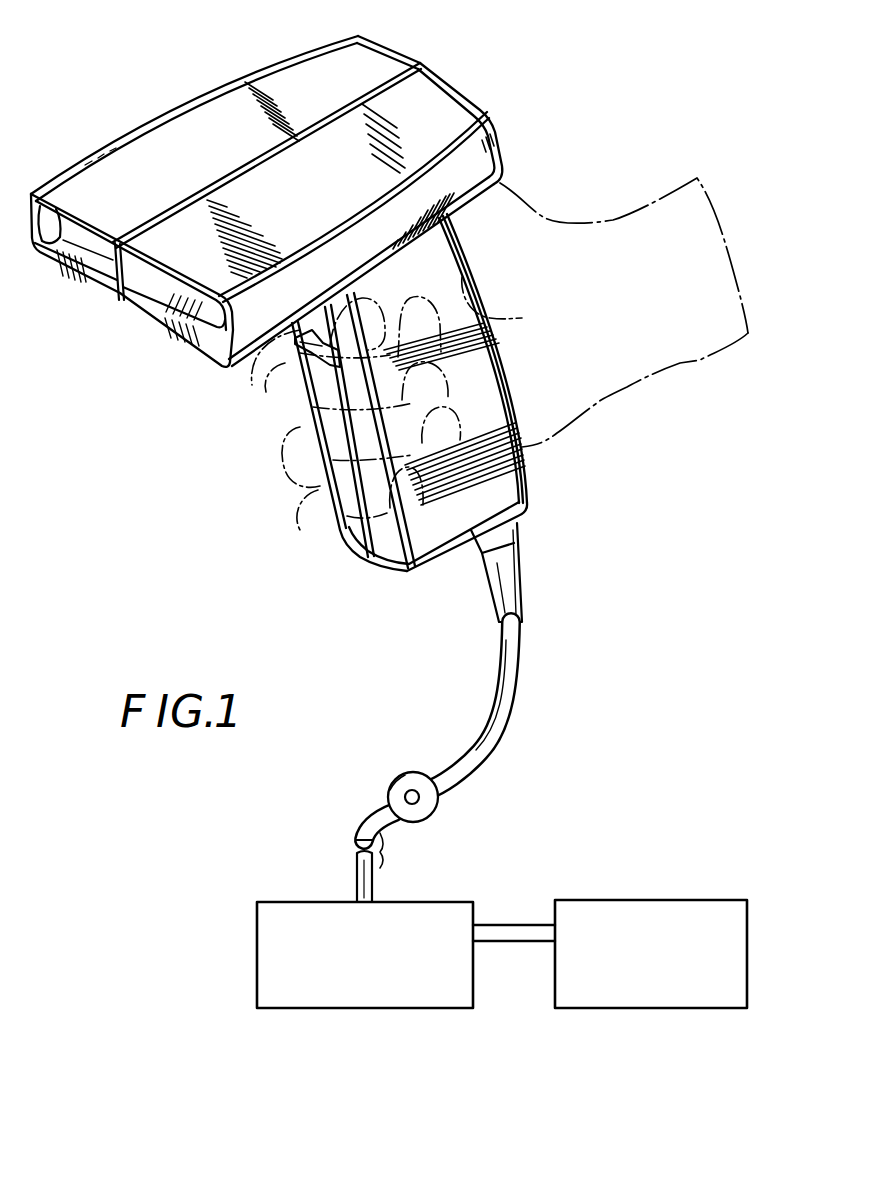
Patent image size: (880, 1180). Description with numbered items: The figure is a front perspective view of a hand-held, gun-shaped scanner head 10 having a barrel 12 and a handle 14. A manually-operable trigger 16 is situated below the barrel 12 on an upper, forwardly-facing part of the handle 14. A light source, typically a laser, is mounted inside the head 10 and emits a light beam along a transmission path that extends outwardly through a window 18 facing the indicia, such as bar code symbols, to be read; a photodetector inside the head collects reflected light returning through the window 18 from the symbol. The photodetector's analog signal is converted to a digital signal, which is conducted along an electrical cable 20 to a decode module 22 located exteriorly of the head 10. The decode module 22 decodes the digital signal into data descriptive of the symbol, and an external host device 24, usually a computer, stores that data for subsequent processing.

The scanner head 10 is at (612, 103).
The barrel 12 is at (270, 207).
The handle 14 is at (403, 392).
The trigger 16 is at (282, 384).
The window 18 is at (177, 290).
The electrical cable 20 is at (520, 577).
The decode module 22 is at (458, 900).
The host device 24 is at (732, 898).